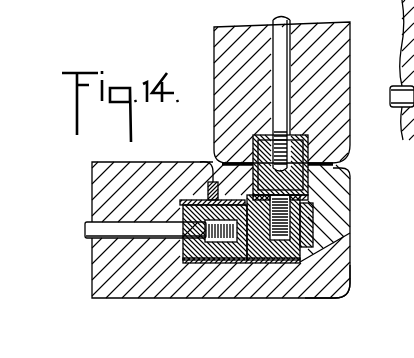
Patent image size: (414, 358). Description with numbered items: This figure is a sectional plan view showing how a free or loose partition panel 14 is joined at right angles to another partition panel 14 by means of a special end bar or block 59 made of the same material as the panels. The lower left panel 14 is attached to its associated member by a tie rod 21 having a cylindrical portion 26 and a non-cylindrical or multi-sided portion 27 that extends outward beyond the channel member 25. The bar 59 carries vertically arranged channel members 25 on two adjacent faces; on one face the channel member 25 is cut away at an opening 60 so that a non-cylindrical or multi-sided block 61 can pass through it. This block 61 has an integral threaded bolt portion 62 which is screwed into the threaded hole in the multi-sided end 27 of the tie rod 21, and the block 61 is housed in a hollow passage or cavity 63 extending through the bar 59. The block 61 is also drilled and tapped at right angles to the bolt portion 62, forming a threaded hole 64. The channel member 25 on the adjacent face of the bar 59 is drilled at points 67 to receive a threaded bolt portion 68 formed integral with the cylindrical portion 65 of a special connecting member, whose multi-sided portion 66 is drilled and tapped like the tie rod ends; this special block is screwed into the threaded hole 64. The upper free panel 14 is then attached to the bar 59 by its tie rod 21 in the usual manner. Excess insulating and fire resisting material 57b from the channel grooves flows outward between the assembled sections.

The partition panel 14 is at (319, 38).
The tie rod 21 is at (280, 38).
The channel member 25 is at (196, 160).
The cylindrical portion 26 is at (192, 180).
The non-cylindrical or multi-sided portion 27 is at (247, 266).
The excess insulating material 57b is at (336, 163).
The end bar or block 59 is at (322, 289).
The cut-away opening 60 is at (241, 260).
The non-cylindrical or multi-sided block 61 is at (269, 260).
The threaded bolt portion 62 is at (206, 264).
The hollow passage or cavity 63 is at (340, 236).
The threaded hole 64 is at (334, 259).
The cylindrical portion 65 is at (338, 178).
The non-cylindrical or multi-sided portion 66 is at (298, 152).
The drilled hole 67 is at (337, 206).
The threaded bolt portion 68 is at (278, 264).